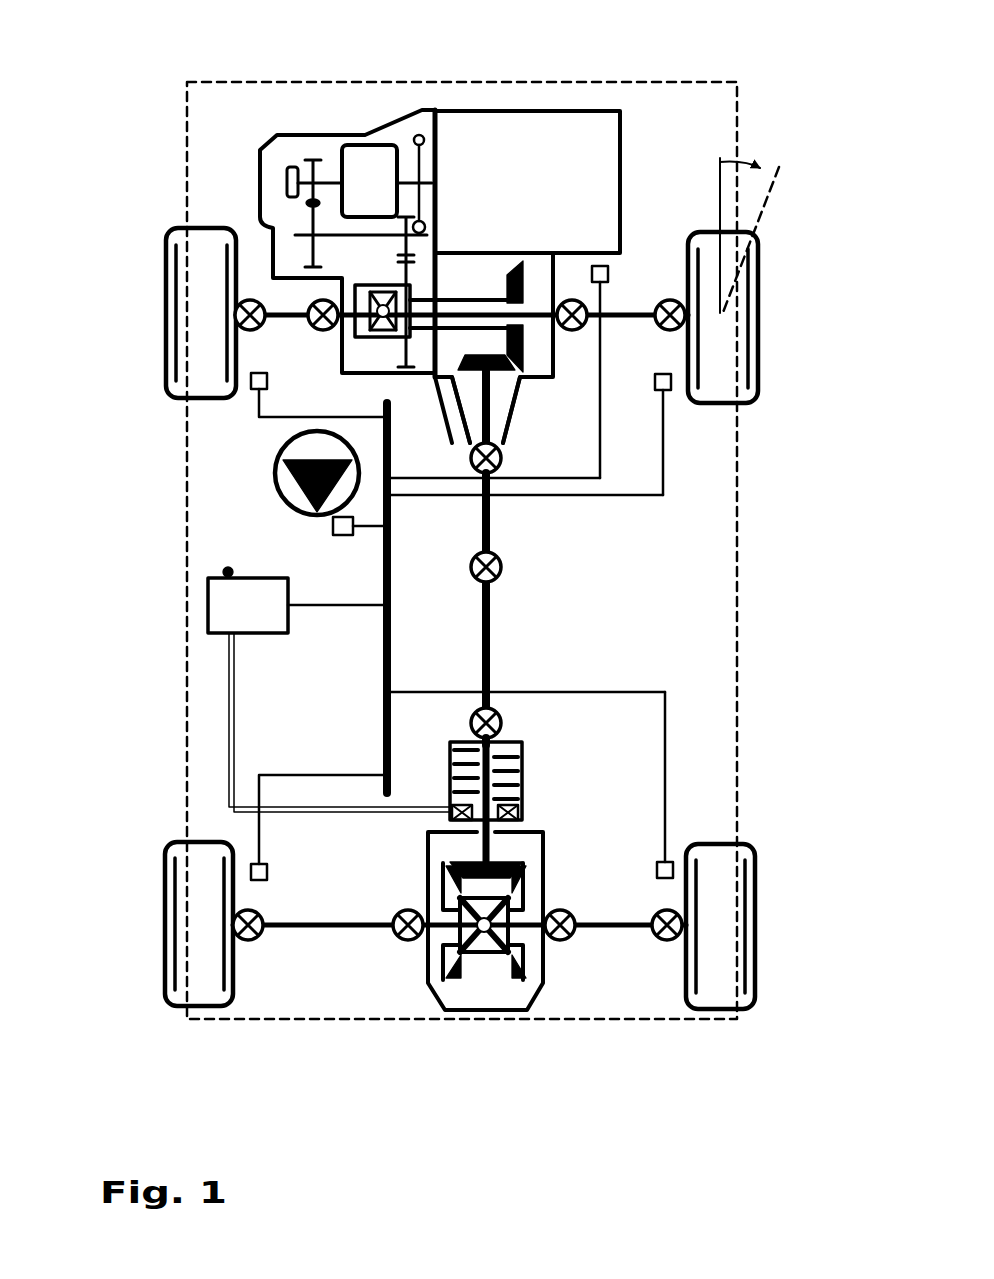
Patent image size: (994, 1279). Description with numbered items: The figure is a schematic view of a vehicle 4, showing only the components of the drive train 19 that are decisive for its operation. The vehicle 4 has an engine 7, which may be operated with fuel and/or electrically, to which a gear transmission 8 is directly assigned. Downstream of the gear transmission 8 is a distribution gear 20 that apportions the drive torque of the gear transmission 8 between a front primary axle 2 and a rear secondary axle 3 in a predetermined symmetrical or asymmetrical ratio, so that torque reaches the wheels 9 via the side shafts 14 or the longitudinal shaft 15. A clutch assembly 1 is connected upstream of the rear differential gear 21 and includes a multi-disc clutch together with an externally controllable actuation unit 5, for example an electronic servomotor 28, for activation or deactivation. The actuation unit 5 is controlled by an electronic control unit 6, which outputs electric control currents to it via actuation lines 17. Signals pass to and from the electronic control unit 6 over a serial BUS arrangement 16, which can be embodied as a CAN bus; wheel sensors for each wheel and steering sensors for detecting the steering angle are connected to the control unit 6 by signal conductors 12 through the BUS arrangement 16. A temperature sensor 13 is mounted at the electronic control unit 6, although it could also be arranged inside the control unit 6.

The clutch assembly 1 is at (523, 783).
The front primary axle 2 is at (797, 318).
The rear secondary axle 3 is at (795, 933).
The vehicle 4 is at (737, 608).
The actuation unit 5 is at (450, 818).
The electronic control unit 6 is at (205, 607).
The engine 7 is at (490, 120).
The gear transmission 8 is at (298, 137).
The wheels 9 is at (175, 248).
The signal conductors 12 is at (255, 415).
The temperature sensor 13 is at (226, 571).
The side shafts 14 is at (612, 310).
The longitudinal shaft 15 is at (498, 620).
The BUS arrangement 16 is at (383, 655).
The actuation lines 17 is at (228, 710).
The drive train 19 is at (700, 540).
The distribution gear 20 is at (534, 352).
The rear differential gear 21 is at (508, 988).
The electronic servomotor 28 is at (450, 820).